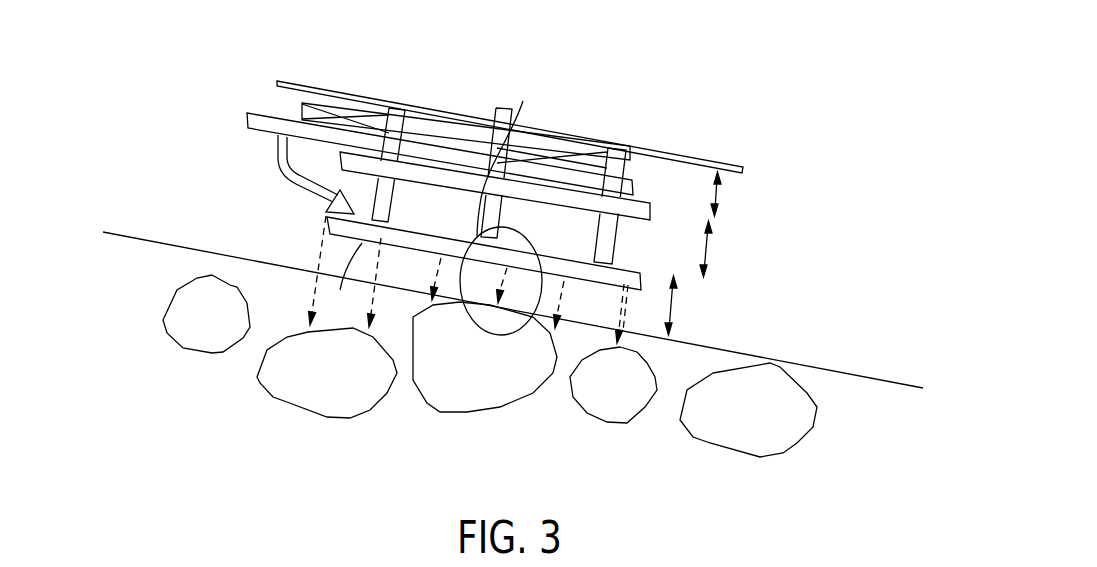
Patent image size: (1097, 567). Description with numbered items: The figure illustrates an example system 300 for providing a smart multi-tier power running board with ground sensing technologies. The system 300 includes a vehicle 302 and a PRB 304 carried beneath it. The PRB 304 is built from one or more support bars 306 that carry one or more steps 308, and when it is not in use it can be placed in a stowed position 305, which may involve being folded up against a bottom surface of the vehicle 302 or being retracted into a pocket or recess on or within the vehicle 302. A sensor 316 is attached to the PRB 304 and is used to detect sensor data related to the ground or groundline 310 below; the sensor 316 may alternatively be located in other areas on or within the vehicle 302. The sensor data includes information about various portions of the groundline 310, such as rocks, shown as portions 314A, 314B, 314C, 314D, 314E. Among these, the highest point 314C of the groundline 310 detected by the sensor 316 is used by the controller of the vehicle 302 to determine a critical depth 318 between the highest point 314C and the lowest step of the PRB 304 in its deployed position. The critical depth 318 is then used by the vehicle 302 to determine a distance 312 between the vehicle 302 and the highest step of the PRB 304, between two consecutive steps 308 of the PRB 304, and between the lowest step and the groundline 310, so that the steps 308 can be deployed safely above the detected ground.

The system 300 is at (806, 74).
The vehicle 302 is at (715, 146).
The PRB 304 is at (302, 224).
The stowed position 305 is at (212, 112).
The support bars 306 is at (398, 198).
The steps 308 is at (505, 157).
The groundline 310 is at (119, 220).
The distance 312 is at (675, 312).
The portion of the ground 314A is at (180, 348).
The portion of the ground 314B is at (290, 405).
The highest point 314C is at (497, 410).
The portion of the ground 314D is at (617, 423).
The portion of the ground 314E is at (790, 453).
The sensor 316 is at (468, 279).
The critical depth 318 is at (480, 349).